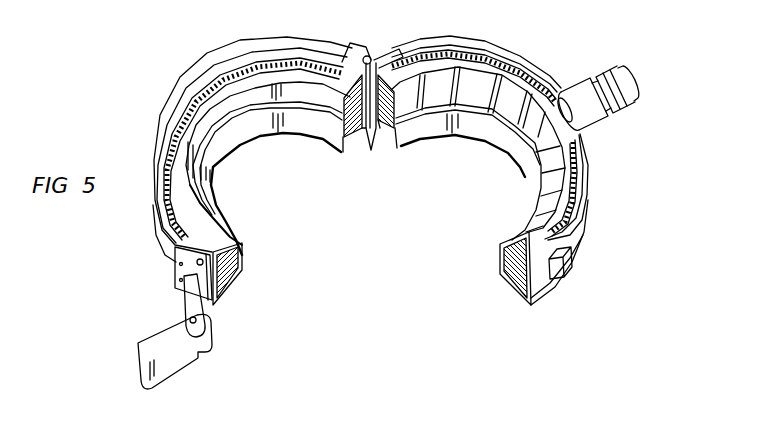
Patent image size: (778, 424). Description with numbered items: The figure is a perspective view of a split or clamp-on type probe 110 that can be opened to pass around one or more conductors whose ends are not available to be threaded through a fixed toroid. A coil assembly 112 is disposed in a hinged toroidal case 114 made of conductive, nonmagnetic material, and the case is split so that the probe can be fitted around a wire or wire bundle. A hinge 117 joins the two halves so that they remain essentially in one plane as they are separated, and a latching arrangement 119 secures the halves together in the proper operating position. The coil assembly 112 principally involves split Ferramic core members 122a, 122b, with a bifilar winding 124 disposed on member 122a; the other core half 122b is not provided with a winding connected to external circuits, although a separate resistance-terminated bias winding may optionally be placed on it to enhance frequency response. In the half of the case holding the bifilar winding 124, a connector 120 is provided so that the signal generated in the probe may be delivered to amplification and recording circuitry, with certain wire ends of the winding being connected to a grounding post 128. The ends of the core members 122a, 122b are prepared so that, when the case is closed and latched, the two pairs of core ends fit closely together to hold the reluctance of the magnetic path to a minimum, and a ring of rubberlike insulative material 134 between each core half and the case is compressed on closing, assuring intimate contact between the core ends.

The split or clamp-on type probe 110 is at (141, 223).
The coil assembly 112 is at (548, 203).
The hinged toroidal case 114 is at (578, 219).
The hinge 117 is at (366, 42).
The latching arrangement 119 is at (164, 368).
The connector 120 is at (617, 110).
The split Ferramic core member 122a is at (518, 248).
The split Ferramic core member 122b is at (212, 236).
The bifilar winding 124 is at (503, 83).
The grounding post 128 is at (394, 415).
The ring of rubberlike insulative material 134 is at (210, 93).